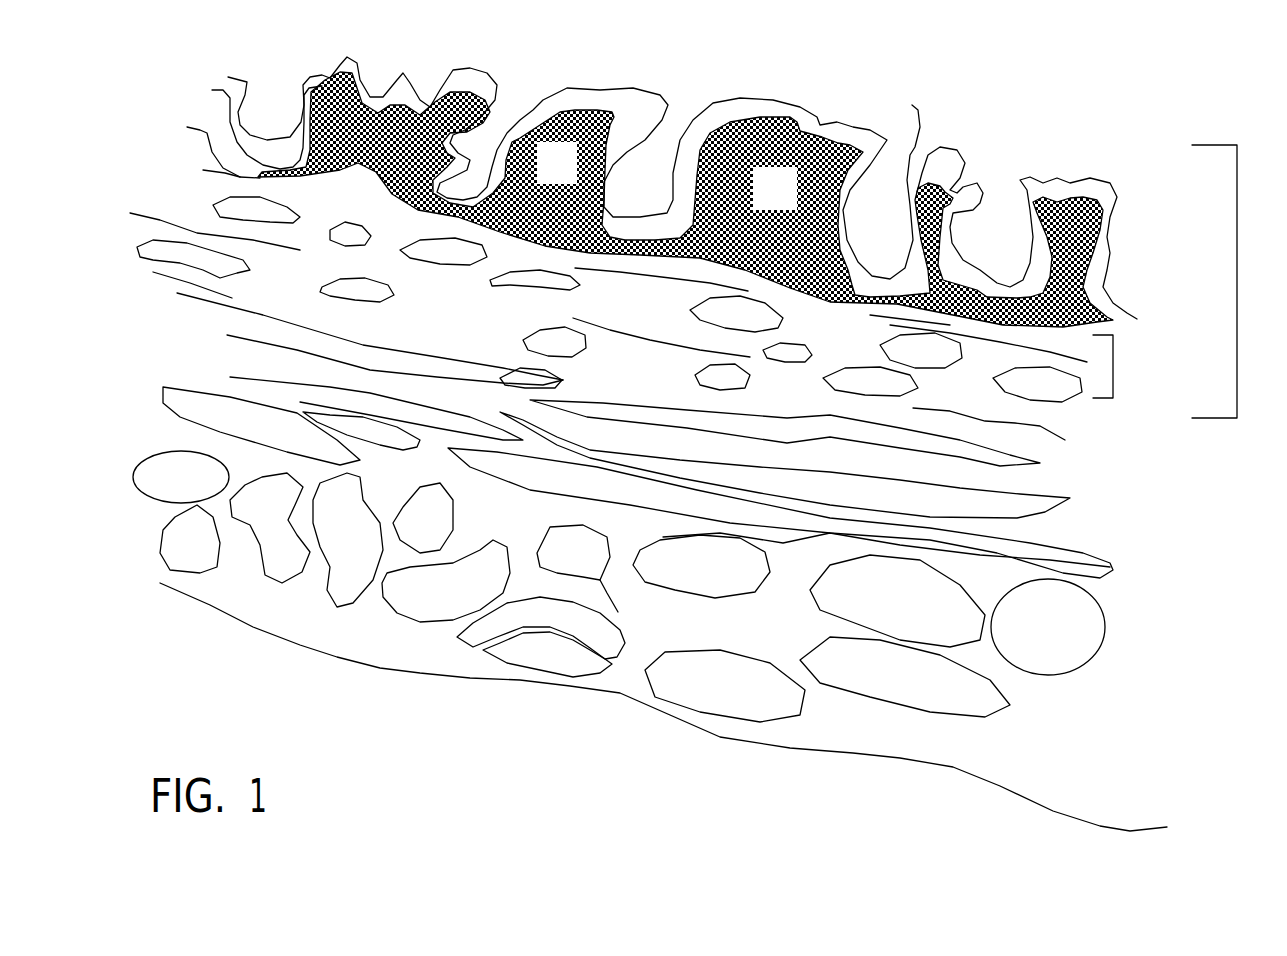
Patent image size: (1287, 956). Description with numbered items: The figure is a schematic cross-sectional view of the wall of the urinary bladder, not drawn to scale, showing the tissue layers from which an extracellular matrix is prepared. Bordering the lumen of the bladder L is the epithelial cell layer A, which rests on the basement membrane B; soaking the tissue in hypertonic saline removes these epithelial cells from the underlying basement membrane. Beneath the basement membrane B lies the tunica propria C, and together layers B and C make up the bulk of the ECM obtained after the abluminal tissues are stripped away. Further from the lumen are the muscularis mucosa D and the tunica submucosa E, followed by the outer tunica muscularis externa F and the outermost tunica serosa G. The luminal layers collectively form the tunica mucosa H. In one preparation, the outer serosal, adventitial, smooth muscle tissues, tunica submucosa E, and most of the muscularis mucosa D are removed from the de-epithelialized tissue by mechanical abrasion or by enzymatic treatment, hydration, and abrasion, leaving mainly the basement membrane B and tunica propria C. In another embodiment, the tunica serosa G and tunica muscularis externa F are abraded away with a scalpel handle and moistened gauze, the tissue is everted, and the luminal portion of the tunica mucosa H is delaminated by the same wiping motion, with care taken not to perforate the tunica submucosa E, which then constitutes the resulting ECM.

The epithelial cell layer A is at (258, 167).
The basement membrane B is at (622, 150).
The tunica propria C is at (546, 179).
The muscularis mucosa D is at (983, 367).
The tunica submucosa E is at (621, 387).
The tunica muscularis externa F is at (652, 586).
The tunica serosa G is at (380, 710).
The tunica mucosa H is at (1231, 281).
The lumen of the bladder L is at (575, 44).